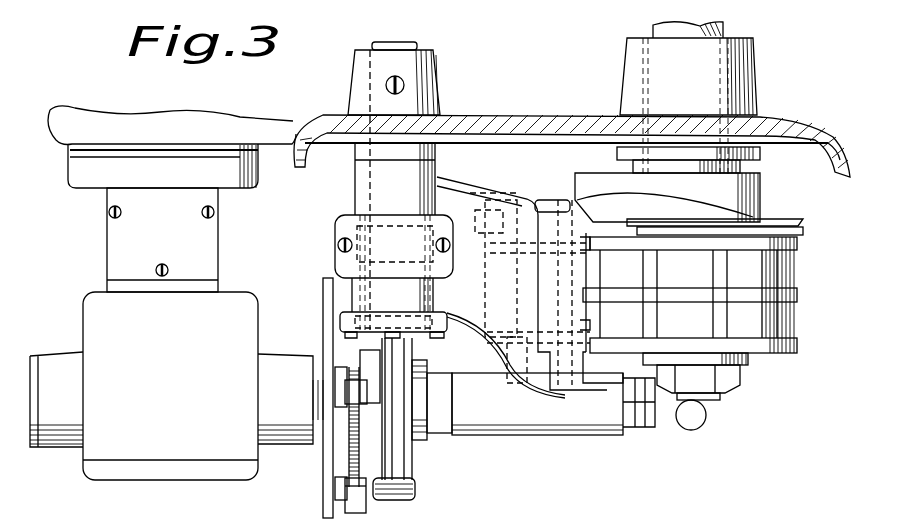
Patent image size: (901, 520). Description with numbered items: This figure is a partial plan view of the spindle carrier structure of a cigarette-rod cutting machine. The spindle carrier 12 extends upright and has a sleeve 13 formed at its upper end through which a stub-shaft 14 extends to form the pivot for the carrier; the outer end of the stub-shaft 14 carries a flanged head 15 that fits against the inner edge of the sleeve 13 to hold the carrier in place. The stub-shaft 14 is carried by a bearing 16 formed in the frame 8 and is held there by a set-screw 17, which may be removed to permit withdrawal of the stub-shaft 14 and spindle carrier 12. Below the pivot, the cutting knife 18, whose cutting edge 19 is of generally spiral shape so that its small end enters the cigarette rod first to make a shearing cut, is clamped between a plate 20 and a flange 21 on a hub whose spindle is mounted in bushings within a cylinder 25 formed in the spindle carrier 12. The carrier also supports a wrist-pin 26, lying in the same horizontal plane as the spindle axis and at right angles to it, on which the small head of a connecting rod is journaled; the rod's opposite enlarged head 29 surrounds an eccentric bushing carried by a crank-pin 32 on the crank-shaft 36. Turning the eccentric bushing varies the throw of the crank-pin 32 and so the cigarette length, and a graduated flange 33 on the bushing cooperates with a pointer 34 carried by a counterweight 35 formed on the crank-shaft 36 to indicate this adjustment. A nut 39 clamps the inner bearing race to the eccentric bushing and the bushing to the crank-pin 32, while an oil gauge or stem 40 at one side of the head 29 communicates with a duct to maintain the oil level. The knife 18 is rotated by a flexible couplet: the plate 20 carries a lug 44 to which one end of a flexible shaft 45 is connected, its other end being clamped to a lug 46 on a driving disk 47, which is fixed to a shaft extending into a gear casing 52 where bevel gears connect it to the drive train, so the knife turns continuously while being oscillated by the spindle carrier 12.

The frame 8 is at (496, 121).
The spindle carrier 12 is at (502, 193).
The sleeve 13 is at (356, 197).
The stub-shaft 14 is at (383, 42).
The flanged head 15 is at (447, 333).
The bearing 16 is at (422, 96).
The set-screw 17 is at (400, 82).
The cutting knife 18 is at (408, 446).
The cutting edge 19 is at (358, 183).
The plate 20 is at (410, 497).
The flange 21 is at (403, 470).
The cylinder 25 is at (620, 422).
The wrist-pin 26 is at (557, 200).
The enlarged head 29 is at (778, 338).
The crank-pin 32 is at (716, 400).
The graduated flange 33 is at (802, 232).
The pointer 34 is at (800, 221).
The counterweight 35 is at (727, 192).
The crank-shaft 36 is at (712, 34).
The nut 39 is at (728, 383).
The oil gauge or stem 40 is at (693, 416).
The lug 44 is at (345, 380).
The flexible shaft 45 is at (352, 440).
The lug 46 is at (345, 500).
The driving disk 47 is at (323, 298).
The gear casing 52 is at (173, 447).